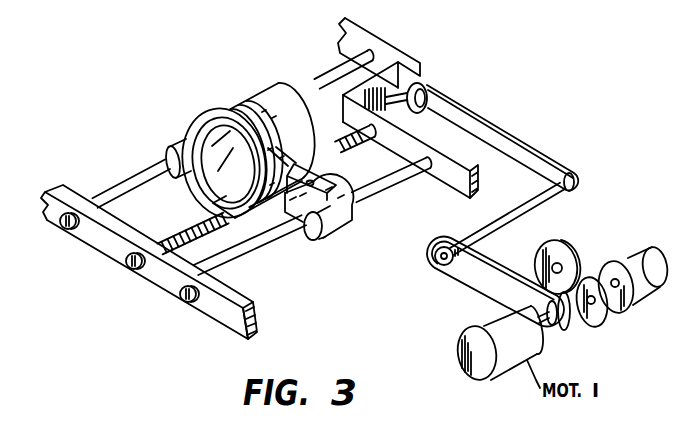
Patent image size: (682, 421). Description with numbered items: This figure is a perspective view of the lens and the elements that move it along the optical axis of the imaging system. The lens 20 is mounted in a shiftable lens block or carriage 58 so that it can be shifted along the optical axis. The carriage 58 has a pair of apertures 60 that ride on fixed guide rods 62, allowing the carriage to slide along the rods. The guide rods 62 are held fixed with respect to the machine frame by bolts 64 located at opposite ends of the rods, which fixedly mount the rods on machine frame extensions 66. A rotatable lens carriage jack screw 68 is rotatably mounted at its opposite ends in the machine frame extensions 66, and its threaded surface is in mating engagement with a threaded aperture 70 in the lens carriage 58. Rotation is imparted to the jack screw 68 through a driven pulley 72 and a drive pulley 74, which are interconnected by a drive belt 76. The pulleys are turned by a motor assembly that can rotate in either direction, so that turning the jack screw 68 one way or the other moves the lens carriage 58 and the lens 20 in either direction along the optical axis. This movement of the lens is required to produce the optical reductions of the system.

The lens 20 is at (244, 169).
The lens block or carriage 58 is at (243, 140).
The apertures 60 is at (226, 202).
The guide rods 62 is at (261, 172).
The bolts 64 is at (110, 270).
The machine frame extensions 66 is at (259, 187).
The lens carriage jack screw 68 is at (266, 190).
The threaded aperture 70 is at (331, 197).
The driven pulley 72 is at (432, 94).
The drive pulley 74 is at (499, 224).
The drive belt 76 is at (502, 138).